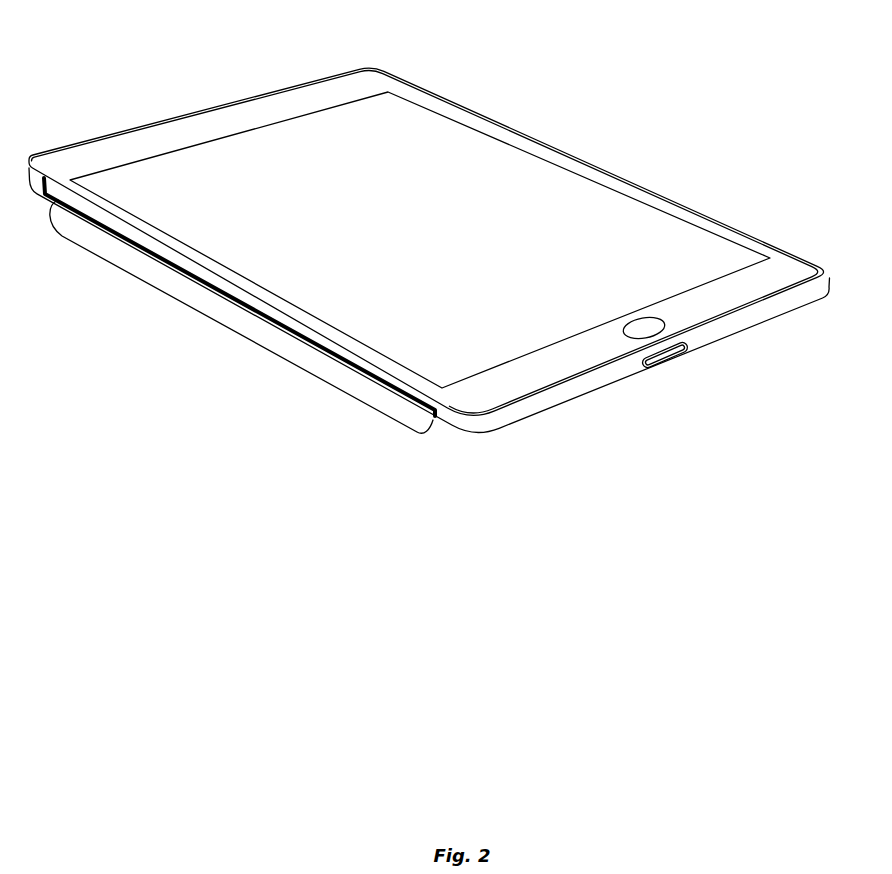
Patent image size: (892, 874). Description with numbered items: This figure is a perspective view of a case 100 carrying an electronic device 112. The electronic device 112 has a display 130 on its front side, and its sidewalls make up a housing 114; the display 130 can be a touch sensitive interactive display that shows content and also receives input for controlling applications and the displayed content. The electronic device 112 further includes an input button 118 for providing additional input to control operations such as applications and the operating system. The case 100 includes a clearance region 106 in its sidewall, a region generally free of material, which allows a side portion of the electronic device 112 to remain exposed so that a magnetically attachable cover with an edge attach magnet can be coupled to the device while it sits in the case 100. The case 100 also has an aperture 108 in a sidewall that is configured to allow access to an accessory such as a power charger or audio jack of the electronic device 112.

The case 100 is at (494, 124).
The electronic device 112 is at (361, 85).
The display 130 is at (607, 184).
The housing 114 is at (193, 266).
The clearance region 106 is at (190, 302).
The input button 118 is at (646, 334).
The aperture 108 is at (668, 362).